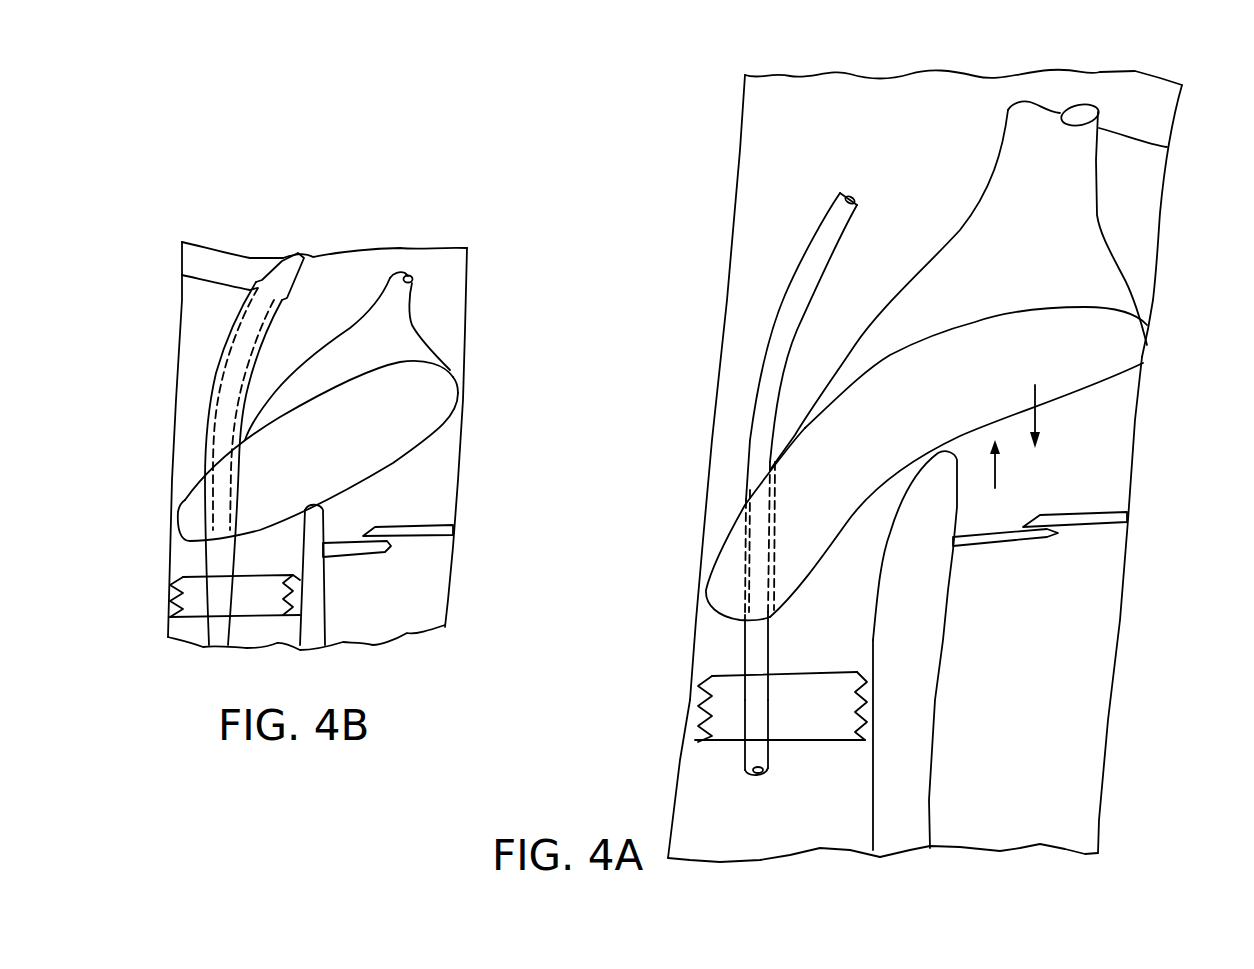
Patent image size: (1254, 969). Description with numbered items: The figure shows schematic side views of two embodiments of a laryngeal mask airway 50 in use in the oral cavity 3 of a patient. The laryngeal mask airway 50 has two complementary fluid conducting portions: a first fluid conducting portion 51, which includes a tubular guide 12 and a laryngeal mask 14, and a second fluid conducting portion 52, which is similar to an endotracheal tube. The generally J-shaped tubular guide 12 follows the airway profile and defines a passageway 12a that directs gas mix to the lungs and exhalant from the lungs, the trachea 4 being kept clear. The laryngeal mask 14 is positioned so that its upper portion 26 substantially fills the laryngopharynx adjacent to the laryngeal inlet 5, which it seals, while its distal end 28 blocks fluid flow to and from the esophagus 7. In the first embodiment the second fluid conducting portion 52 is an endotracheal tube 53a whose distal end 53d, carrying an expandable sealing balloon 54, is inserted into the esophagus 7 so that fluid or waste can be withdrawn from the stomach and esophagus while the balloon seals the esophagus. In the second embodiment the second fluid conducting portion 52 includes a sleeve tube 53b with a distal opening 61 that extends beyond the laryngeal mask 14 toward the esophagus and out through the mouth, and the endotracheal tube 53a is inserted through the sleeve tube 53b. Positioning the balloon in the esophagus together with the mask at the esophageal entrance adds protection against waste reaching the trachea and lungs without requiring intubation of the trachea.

In FIG. 4A, the oral cavity 3 is at (745, 293).
In FIG. 4B, the oral cavity 3 is at (193, 313).
In FIG. 4A, the trachea 4 is at (1070, 682).
In FIG. 4B, the trachea 4 is at (432, 590).
In FIG. 4A, the laryngeal inlet 5 is at (1120, 410).
In FIG. 4B, the laryngeal inlet 5 is at (460, 350).
In FIG. 4A, the esophagus 7 is at (710, 788).
In FIG. 4B, the esophagus 7 is at (167, 633).
In FIG. 4A, the tubular guide 12 is at (1167, 147).
In FIG. 4B, the tubular guide 12 is at (403, 297).
In FIG. 4A, the passageway 12a is at (1075, 115).
In FIG. 4B, the passageway 12a is at (415, 277).
In FIG. 4A, the laryngeal mask 14 is at (1127, 345).
In FIG. 4B, the laryngeal mask 14 is at (433, 412).
In FIG. 4A, the upper portion 26 is at (1114, 328).
In FIG. 4B, the upper portion 26 is at (433, 383).
In FIG. 4A, the distal end 28 is at (719, 584).
In FIG. 4B, the distal end 28 is at (193, 513).
In FIG. 4A, the laryngeal mask airway 50 is at (887, 163).
In FIG. 4B, the laryngeal mask airway 50 is at (383, 230).
In FIG. 4A, the first fluid conducting portion 51 is at (1137, 190).
In FIG. 4B, the first fluid conducting portion 51 is at (447, 330).
In FIG. 4A, the second fluid conducting portion 52 is at (793, 247).
In FIG. 4B, the second fluid conducting portion 52 is at (193, 557).
In FIG. 4A, the endotracheal tube 53a is at (758, 378).
In FIG. 4B, the endotracheal tube 53a is at (282, 272).
In FIG. 4B, the tube 53b is at (210, 284).
In FIG. 4A, the distal end 53d is at (745, 656).
In FIG. 4B, the distal end 53d is at (172, 566).
In FIG. 4A, the sealing balloon 54 is at (700, 703).
In FIG. 4B, the sealing balloon 54 is at (170, 600).
In FIG. 4B, the distal opening 61 is at (187, 553).